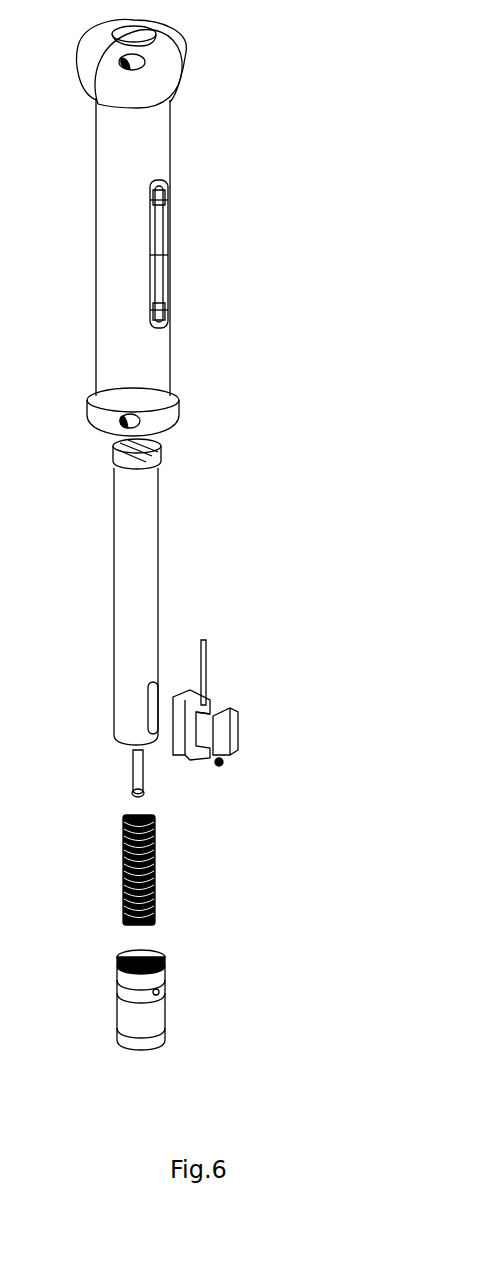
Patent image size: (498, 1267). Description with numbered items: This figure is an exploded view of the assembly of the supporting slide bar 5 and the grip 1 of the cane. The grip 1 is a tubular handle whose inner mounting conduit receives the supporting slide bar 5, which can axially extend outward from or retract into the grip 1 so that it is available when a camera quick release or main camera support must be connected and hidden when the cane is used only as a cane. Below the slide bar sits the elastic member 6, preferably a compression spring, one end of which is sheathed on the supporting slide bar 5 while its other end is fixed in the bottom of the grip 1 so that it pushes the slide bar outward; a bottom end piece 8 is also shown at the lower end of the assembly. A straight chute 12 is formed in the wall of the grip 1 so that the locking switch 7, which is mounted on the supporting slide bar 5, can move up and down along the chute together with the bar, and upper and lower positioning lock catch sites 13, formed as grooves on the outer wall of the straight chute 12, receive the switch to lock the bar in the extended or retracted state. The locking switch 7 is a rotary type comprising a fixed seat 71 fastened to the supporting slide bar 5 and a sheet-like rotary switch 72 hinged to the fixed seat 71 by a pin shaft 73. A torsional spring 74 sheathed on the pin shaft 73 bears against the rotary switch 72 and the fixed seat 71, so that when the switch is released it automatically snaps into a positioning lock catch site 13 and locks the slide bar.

The grip 1 is at (132, 228).
The supporting slide bar 5 is at (142, 545).
The elastic member 6 is at (122, 838).
The locking switch 7 is at (278, 727).
The end cap 8 is at (141, 1000).
The straight chute 12 is at (170, 250).
The positioning lock catch sites 13 is at (165, 196).
The fixed seat 71 is at (190, 756).
The rotary switch 72 is at (230, 736).
The pin shaft 73 is at (204, 660).
The torsional spring 74 is at (222, 762).